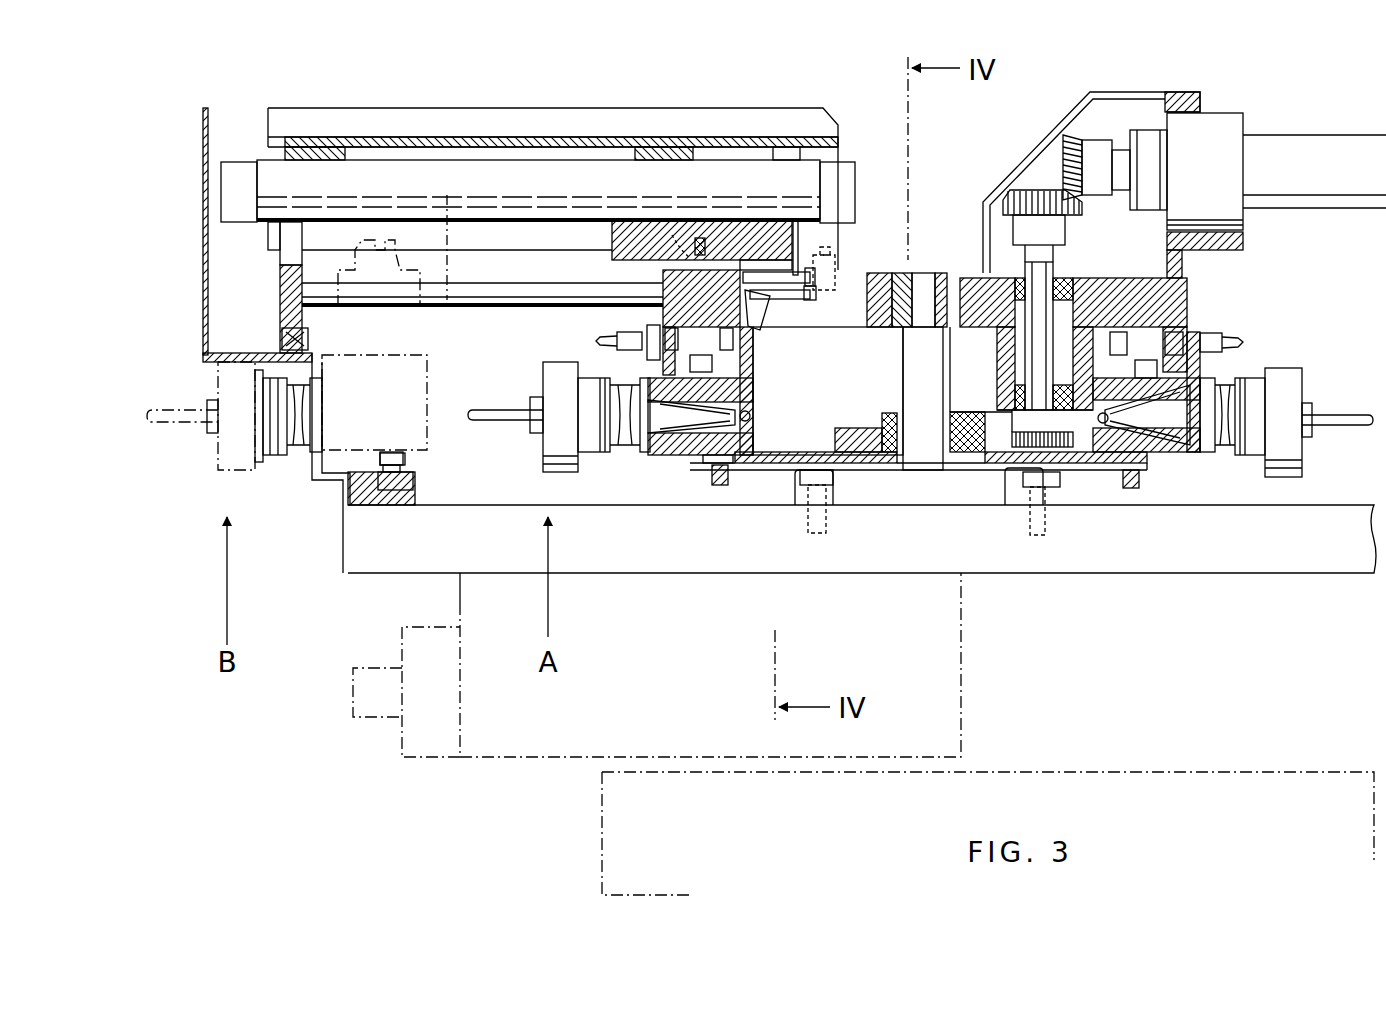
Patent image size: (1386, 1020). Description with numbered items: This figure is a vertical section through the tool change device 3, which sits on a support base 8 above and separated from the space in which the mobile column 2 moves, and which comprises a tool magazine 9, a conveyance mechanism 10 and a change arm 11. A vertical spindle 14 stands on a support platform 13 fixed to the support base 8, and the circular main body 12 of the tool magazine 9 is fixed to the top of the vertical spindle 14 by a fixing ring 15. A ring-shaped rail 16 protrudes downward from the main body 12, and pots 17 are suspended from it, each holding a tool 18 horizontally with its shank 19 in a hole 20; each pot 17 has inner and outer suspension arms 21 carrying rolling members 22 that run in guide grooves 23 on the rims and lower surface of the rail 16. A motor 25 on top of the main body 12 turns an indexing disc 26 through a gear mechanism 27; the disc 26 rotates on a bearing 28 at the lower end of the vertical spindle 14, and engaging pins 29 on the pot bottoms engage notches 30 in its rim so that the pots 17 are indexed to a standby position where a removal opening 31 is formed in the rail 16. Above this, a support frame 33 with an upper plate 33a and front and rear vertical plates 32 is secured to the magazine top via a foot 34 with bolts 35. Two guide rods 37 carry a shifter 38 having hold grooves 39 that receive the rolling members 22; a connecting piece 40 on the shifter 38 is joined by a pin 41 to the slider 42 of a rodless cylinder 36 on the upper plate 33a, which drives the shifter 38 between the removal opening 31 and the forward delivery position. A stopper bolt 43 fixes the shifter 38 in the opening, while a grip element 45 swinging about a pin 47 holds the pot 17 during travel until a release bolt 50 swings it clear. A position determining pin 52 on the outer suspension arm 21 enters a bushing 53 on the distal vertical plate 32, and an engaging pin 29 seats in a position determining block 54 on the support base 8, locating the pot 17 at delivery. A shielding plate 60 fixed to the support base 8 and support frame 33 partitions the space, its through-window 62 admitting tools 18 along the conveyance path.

The mobile column 2 is at (600, 806).
The tool change device 3 is at (860, 126).
The support base 8 is at (665, 565).
The tool magazine 9 is at (940, 188).
The conveyance mechanism 10 is at (266, 238).
The change arm 11 is at (378, 712).
The main body 12 is at (975, 277).
The support platform 13 is at (910, 505).
The vertical spindle 14 is at (935, 470).
The fixing ring 15 is at (940, 272).
The rail 16 is at (1200, 380).
The pot 17 is at (430, 388).
The tool 18 is at (542, 440).
The shank 19 is at (660, 440).
The hole 20 is at (1150, 432).
The suspension arm 21 is at (664, 336).
The rolling member 22 is at (750, 390).
The guide groove 23 is at (1140, 320).
The motor 25 is at (1312, 134).
The indexing disc 26 is at (775, 465).
The gear mechanism 27 is at (1040, 192).
The bearing 28 is at (960, 440).
The engaging pin 29 is at (415, 482).
The notch 30 is at (728, 480).
The removal opening 31 is at (775, 430).
The vertical plate 32 is at (285, 298).
The support frame 33 is at (290, 112).
The upper plate 33a is at (572, 137).
The foot 34 is at (840, 268).
The bolt 35 is at (840, 250).
The rodless cylinder 36 is at (488, 160).
The guide rod 37 is at (490, 300).
The shifter 38 is at (662, 290).
The hold groove 39 is at (688, 345).
The connecting piece 40 is at (672, 235).
The pin 41 is at (703, 237).
The slider 42 is at (620, 230).
The stopper bolt 43 is at (757, 272).
The grip element 45 is at (790, 368).
The pin 47 is at (770, 318).
The release bolt 50 is at (792, 288).
The position determining pin 52 is at (598, 340).
The bushing 53 is at (280, 322).
The position determining block 54 is at (360, 492).
The shielding plate 60 is at (208, 340).
The through-window 62 is at (310, 462).